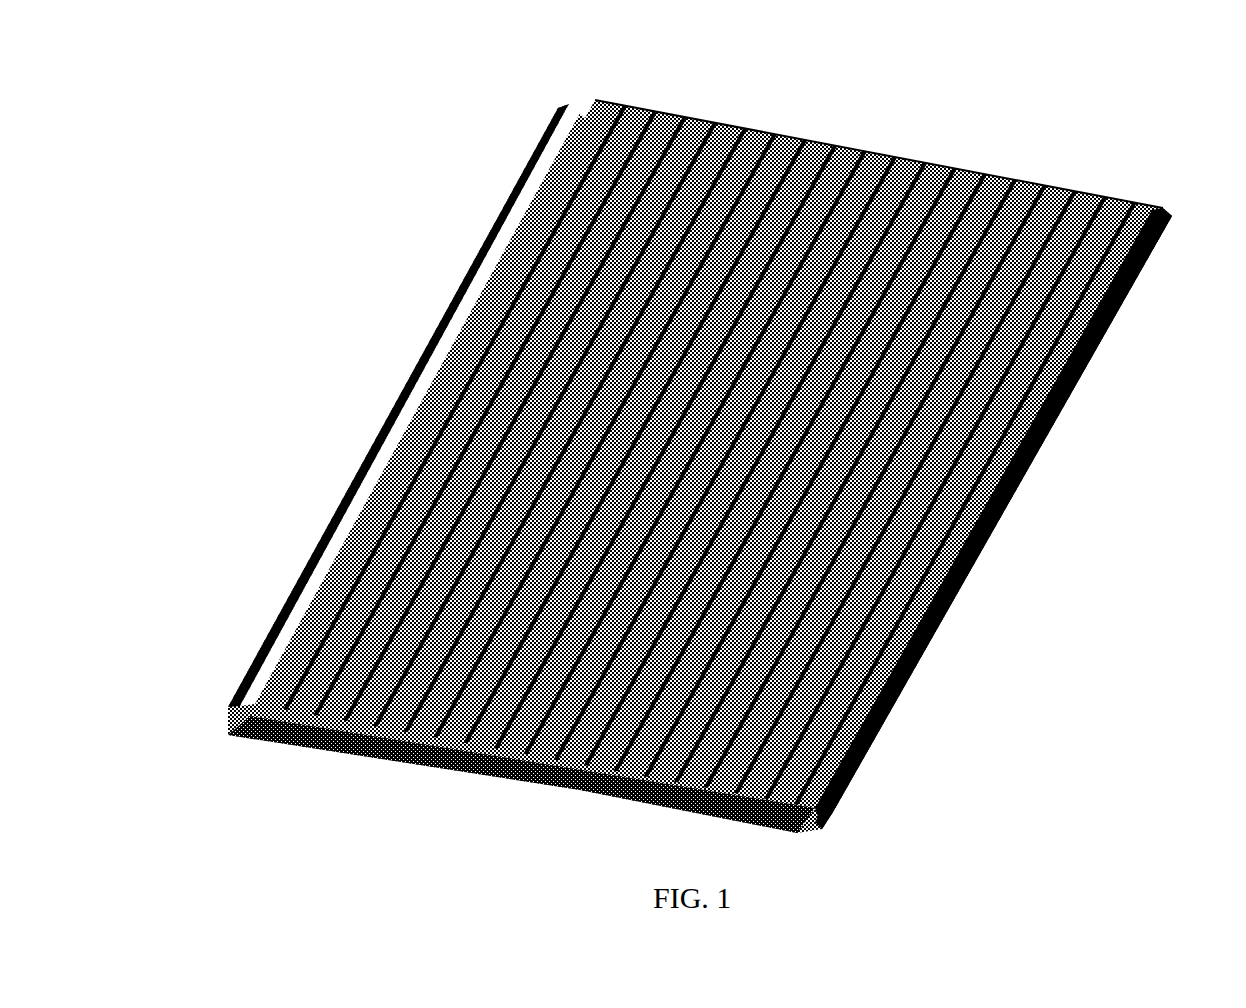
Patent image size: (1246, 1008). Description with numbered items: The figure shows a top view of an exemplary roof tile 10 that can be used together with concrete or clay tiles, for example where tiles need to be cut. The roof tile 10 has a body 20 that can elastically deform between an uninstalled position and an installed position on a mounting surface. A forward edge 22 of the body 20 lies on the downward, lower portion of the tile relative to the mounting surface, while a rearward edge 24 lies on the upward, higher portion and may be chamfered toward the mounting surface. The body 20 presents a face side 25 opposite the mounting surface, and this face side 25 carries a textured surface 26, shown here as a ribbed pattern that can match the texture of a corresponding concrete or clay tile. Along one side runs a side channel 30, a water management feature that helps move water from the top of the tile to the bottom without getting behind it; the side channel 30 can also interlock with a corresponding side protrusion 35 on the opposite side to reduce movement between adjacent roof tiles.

The roof tile 10 is at (321, 193).
The body 20 is at (701, 465).
The forward edge 22 is at (416, 767).
The rearward edge 24 is at (730, 123).
The face side 25 is at (925, 545).
The textured surface 26 is at (875, 210).
The side channel 30 is at (293, 628).
The side protrusion 35 is at (838, 800).